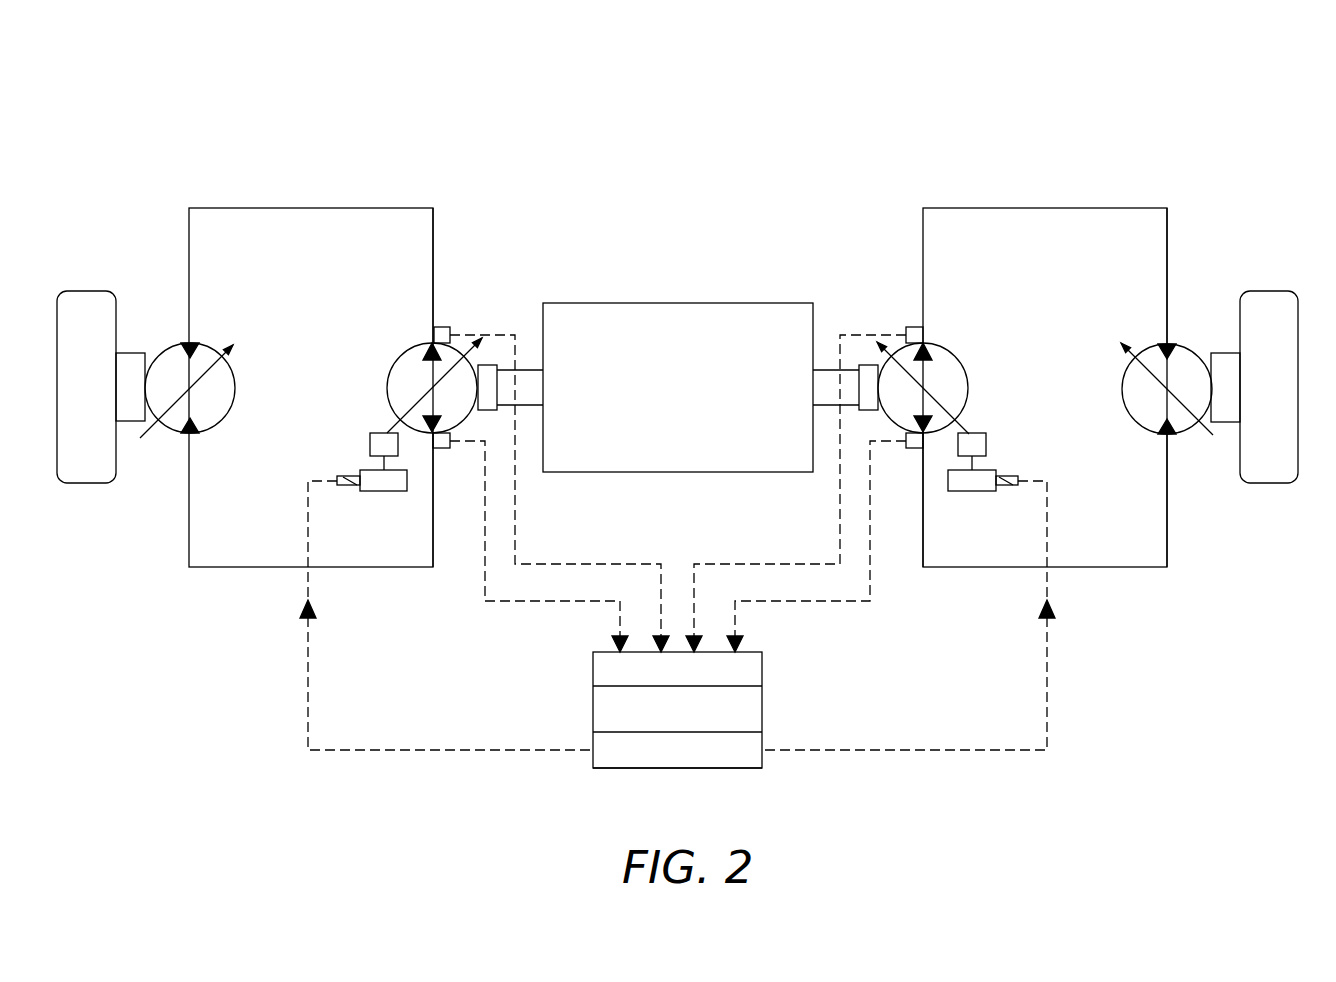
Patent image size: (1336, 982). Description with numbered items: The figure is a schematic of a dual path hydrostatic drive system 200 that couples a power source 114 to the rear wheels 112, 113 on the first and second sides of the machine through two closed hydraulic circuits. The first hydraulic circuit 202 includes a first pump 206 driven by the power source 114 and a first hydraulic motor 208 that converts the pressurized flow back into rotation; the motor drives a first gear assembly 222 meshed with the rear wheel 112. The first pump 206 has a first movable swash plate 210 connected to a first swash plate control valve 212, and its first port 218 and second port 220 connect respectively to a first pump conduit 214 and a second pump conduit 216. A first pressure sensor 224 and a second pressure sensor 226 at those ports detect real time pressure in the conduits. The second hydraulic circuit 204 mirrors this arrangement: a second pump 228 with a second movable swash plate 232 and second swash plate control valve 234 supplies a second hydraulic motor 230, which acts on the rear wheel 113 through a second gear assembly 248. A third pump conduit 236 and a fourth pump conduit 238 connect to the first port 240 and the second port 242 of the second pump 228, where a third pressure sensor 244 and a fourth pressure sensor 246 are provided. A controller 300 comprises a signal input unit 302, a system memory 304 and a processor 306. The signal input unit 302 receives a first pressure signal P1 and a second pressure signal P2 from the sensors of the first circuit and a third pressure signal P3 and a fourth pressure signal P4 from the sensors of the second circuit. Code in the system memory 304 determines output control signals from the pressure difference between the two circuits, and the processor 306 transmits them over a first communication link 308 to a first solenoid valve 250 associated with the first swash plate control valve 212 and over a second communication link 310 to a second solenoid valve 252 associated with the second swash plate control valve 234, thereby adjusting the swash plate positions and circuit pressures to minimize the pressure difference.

The hydrostatic drive system 200 is at (134, 119).
The first hydraulic circuit 202 is at (302, 207).
The second hydraulic circuit 204 is at (1053, 207).
The first pump 206 is at (398, 356).
The first hydraulic motor 208 is at (228, 418).
The first movable swash plate 210 is at (418, 393).
The first swash plate control valve 212 is at (370, 440).
The first pump conduit 214 is at (433, 252).
The second pump conduit 216 is at (433, 553).
The first port 218 is at (428, 343).
The second port 220 is at (430, 432).
The first gear assembly 222 is at (130, 353).
The first pressure sensor 224 is at (441, 327).
The second pressure sensor 226 is at (443, 448).
The second pump 228 is at (957, 356).
The second hydraulic motor 230 is at (1190, 345).
The second movable swash plate 232 is at (937, 393).
The second swash plate control valve 234 is at (986, 440).
The third pump conduit 236 is at (1167, 252).
The fourth pump conduit 238 is at (1167, 520).
The first port 240 is at (928, 343).
The second port 242 is at (927, 432).
The third pressure sensor 244 is at (912, 327).
The fourth pressure sensor 246 is at (912, 448).
The second gear assembly 248 is at (1225, 422).
The first solenoid valve 250 is at (372, 487).
The second solenoid valve 252 is at (983, 487).
The rear wheel 112 is at (57, 410).
The rear wheel 113 is at (1298, 410).
The power source 114 is at (678, 387).
The controller 300 is at (638, 741).
The signal input unit 302 is at (677, 672).
The system memory 304 is at (677, 715).
The processor 306 is at (603, 768).
The first communication link 308 is at (446, 641).
The second communication link 310 is at (908, 641).
The first pressure signal P1 is at (500, 332).
The second pressure signal P2 is at (545, 601).
The third pressure signal P3 is at (855, 332).
The fourth pressure signal P4 is at (812, 601).